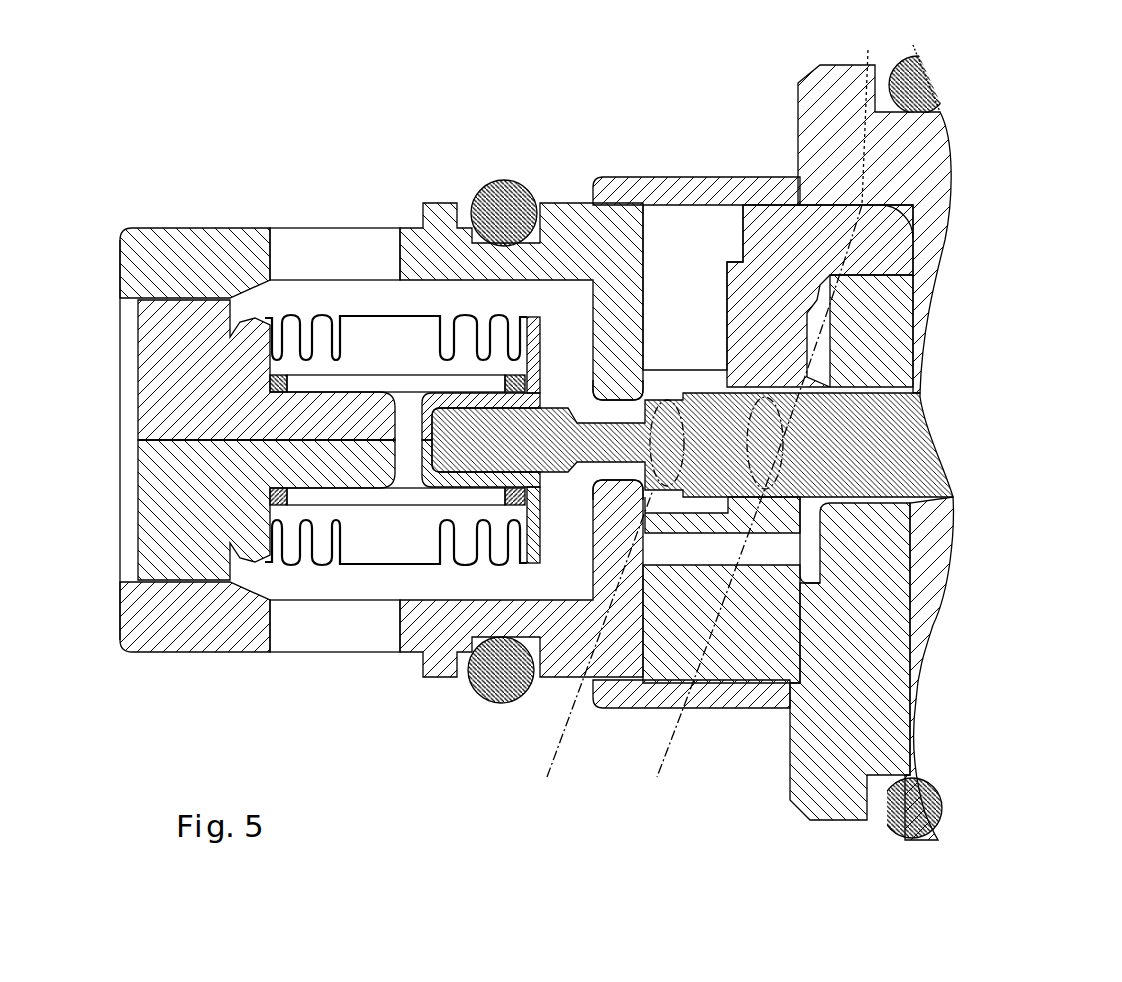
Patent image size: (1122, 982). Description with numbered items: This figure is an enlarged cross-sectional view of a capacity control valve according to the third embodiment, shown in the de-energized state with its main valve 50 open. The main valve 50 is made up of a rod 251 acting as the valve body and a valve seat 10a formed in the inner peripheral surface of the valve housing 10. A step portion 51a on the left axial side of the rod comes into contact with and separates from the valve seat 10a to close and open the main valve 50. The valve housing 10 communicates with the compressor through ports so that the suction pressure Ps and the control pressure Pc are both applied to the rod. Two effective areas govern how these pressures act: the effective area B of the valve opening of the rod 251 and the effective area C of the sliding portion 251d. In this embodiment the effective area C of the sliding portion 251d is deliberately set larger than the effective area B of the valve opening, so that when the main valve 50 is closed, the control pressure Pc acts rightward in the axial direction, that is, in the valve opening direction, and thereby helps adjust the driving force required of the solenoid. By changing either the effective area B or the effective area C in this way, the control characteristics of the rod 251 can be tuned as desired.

The valve housing 10 is at (150, 210).
The main valve 50 is at (692, 293).
The valve seat 10a is at (593, 398).
The step portion 51a is at (612, 392).
The rod 251 is at (950, 533).
The sliding portion 251d is at (868, 112).
The suction pressure Ps is at (333, 226).
The control pressure Pc is at (690, 176).
The effective area of the valve opening B is at (595, 655).
The effective area of the sliding portion C is at (754, 513).